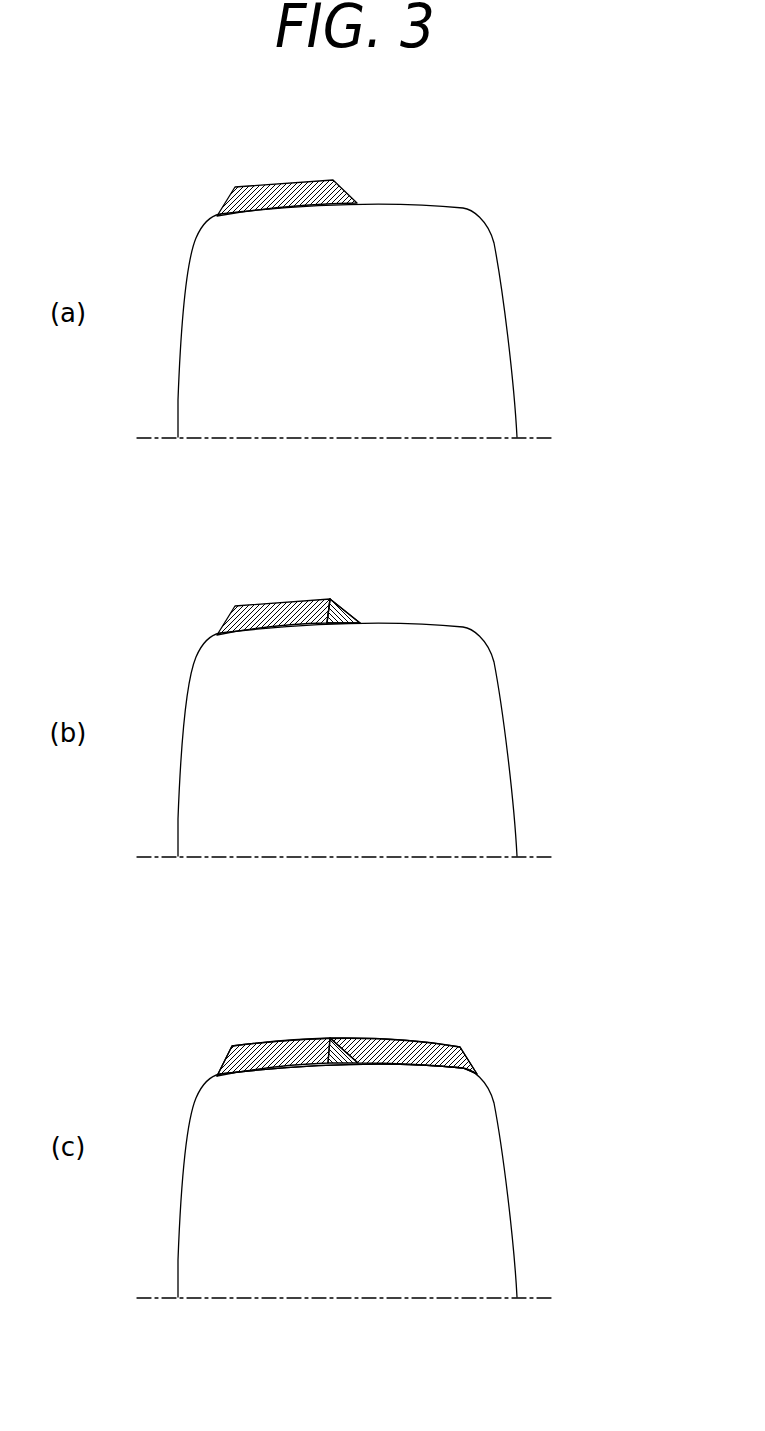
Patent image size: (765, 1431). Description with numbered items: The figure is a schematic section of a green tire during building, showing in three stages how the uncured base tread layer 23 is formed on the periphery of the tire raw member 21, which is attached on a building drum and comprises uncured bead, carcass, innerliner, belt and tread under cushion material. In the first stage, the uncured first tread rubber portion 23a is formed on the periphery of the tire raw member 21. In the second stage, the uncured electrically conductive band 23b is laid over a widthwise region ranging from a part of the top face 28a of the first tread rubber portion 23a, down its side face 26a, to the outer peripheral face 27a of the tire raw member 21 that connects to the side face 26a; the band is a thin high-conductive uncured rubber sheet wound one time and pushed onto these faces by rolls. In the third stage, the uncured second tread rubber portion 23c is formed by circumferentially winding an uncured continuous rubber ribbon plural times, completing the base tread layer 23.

The tire raw member 21 is at (467, 282).
The uncured base tread layer 23 is at (477, 1048).
The uncured first tread rubber portion 23a is at (277, 190).
The uncured electrically conductive band 23b is at (360, 603).
The uncured second tread rubber portion 23c is at (407, 1042).
The side face 26a is at (345, 624).
The outer peripheral face 27a is at (360, 625).
The top face 28a is at (323, 626).